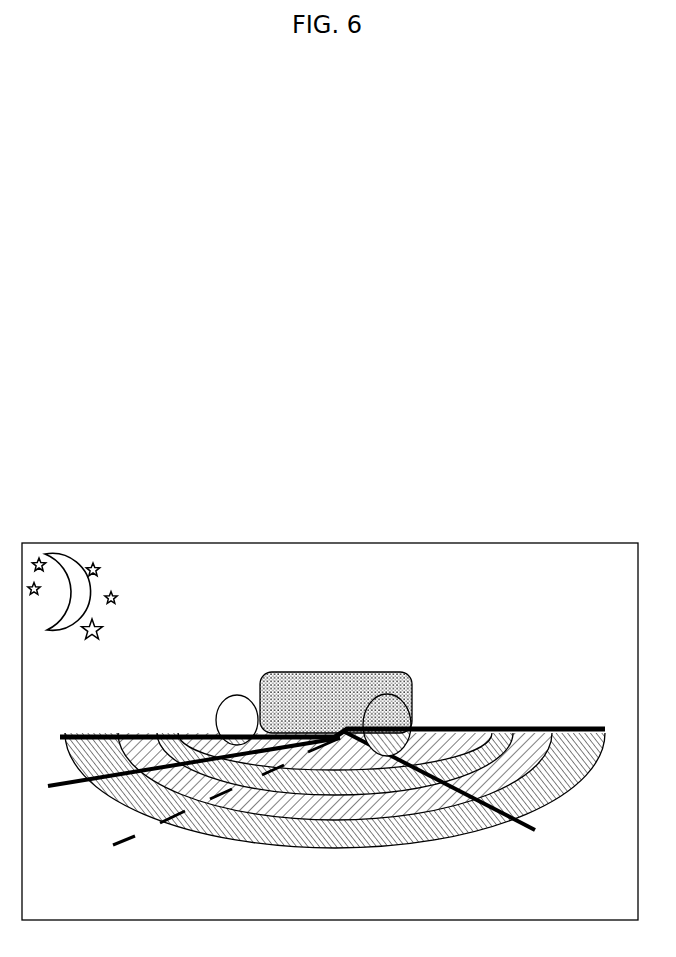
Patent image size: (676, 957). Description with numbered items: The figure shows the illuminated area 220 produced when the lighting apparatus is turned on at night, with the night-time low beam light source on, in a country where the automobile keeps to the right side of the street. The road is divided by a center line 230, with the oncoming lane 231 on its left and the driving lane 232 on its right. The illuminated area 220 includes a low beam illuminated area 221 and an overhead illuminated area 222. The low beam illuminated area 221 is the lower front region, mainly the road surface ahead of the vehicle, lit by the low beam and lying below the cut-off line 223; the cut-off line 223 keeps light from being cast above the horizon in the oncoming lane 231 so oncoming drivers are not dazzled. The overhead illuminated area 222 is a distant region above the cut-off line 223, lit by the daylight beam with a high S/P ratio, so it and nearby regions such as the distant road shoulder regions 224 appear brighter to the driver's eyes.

The illuminated area 220 is at (417, 653).
The low beam illuminated area 221 is at (511, 727).
The overhead illuminated area 222 is at (413, 690).
The cut-off line 223 is at (99, 736).
The distant road shoulder regions 224 is at (363, 694).
The center line 230 is at (128, 847).
The oncoming lane 231 is at (88, 827).
The driving lane 232 is at (342, 864).